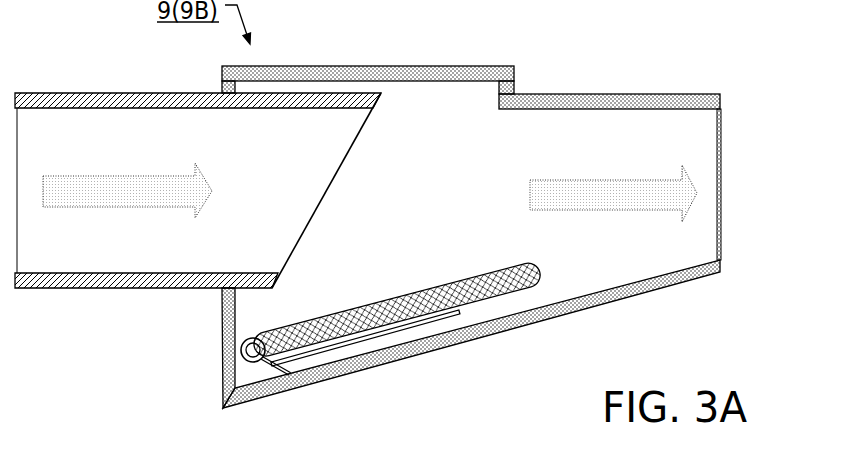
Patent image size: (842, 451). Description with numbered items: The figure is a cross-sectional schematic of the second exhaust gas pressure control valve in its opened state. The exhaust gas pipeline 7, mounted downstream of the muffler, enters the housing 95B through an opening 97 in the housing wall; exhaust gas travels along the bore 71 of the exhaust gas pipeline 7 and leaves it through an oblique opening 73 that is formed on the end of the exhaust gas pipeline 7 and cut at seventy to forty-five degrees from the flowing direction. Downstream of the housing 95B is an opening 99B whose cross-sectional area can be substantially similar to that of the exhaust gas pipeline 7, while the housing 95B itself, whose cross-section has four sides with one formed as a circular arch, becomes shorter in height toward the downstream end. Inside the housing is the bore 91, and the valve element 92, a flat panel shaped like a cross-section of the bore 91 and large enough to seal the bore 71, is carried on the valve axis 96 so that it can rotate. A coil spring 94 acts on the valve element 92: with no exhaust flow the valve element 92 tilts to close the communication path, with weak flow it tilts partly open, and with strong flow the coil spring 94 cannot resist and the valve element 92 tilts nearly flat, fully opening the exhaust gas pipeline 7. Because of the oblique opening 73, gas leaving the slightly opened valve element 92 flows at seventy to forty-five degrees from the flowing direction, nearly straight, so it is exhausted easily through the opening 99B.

The exhaust gas pipeline 7 is at (198, 211).
The bore 71 is at (127, 173).
The oblique opening 73 is at (333, 190).
The opening 97 is at (195, 234).
The housing 95B is at (368, 63).
The opening 99B is at (514, 234).
The bore 91 is at (525, 209).
The valve element 92 is at (396, 303).
The coil spring 94 is at (369, 356).
The valve axis 96 is at (219, 367).